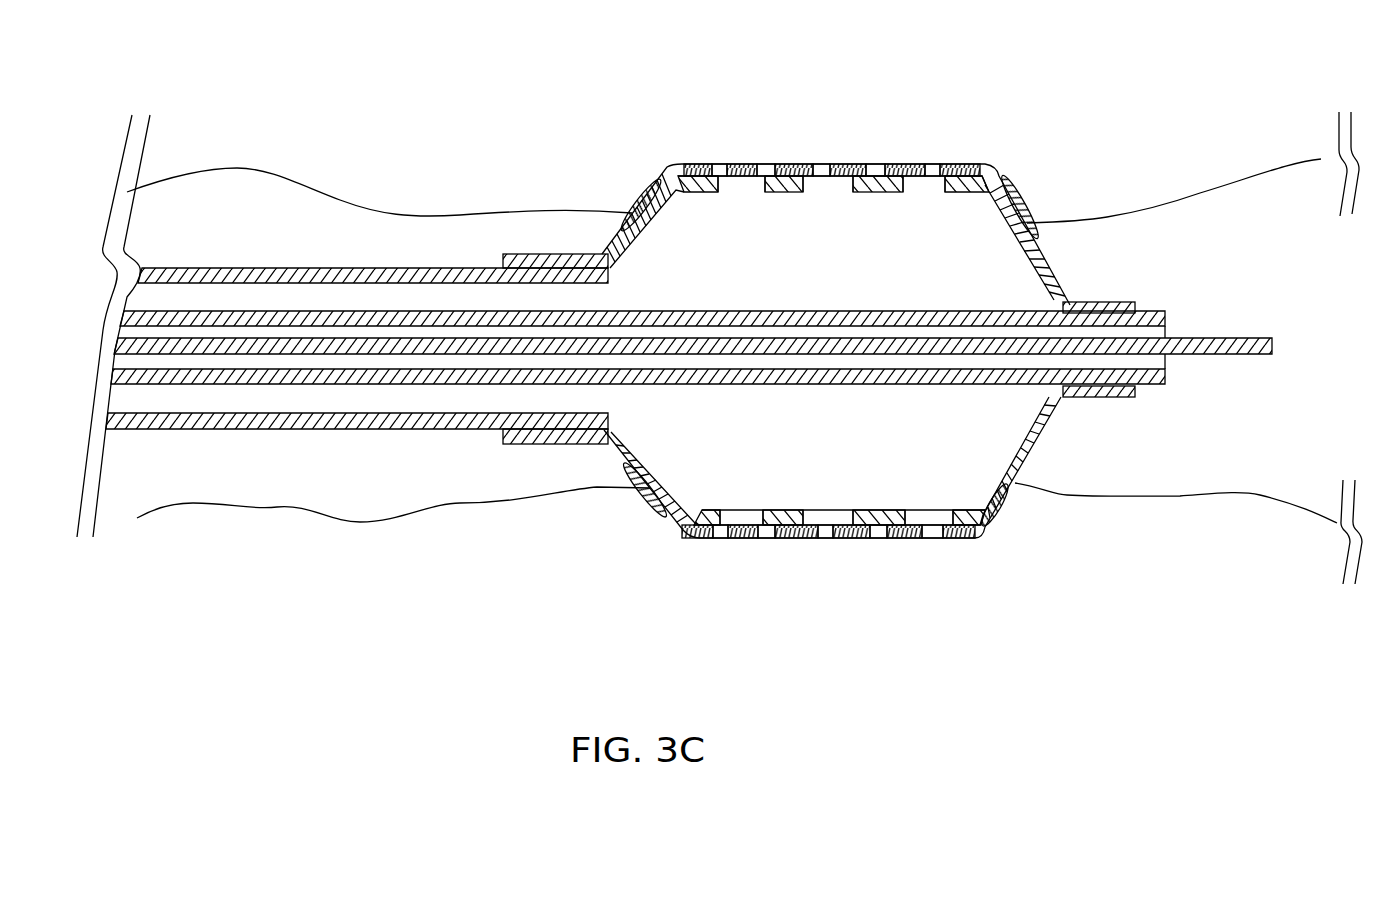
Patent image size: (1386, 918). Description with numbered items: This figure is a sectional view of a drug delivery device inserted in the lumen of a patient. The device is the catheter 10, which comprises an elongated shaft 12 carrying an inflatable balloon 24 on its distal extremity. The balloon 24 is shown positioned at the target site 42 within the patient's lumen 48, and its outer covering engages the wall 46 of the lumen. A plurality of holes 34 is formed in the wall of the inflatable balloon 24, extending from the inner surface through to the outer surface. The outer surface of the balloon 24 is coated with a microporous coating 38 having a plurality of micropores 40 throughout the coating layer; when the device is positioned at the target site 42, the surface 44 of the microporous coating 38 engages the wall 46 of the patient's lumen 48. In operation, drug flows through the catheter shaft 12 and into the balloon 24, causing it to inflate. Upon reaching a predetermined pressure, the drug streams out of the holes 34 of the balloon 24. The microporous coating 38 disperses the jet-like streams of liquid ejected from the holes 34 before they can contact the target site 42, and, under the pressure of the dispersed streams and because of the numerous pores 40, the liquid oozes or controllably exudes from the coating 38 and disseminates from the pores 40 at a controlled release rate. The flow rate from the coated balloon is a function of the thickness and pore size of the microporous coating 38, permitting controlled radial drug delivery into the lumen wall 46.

The catheter 10 is at (539, 488).
The elongated shaft 12 is at (493, 445).
The inflatable balloon 24 is at (663, 130).
The holes 34 is at (745, 192).
The microporous coating 38 is at (912, 164).
The micropores 40 is at (762, 164).
The target site 42 is at (851, 58).
The surface of the microporous coating 44 is at (1002, 182).
The wall of the patient's lumen 46 is at (345, 190).
The patient's lumen 48 is at (1250, 281).